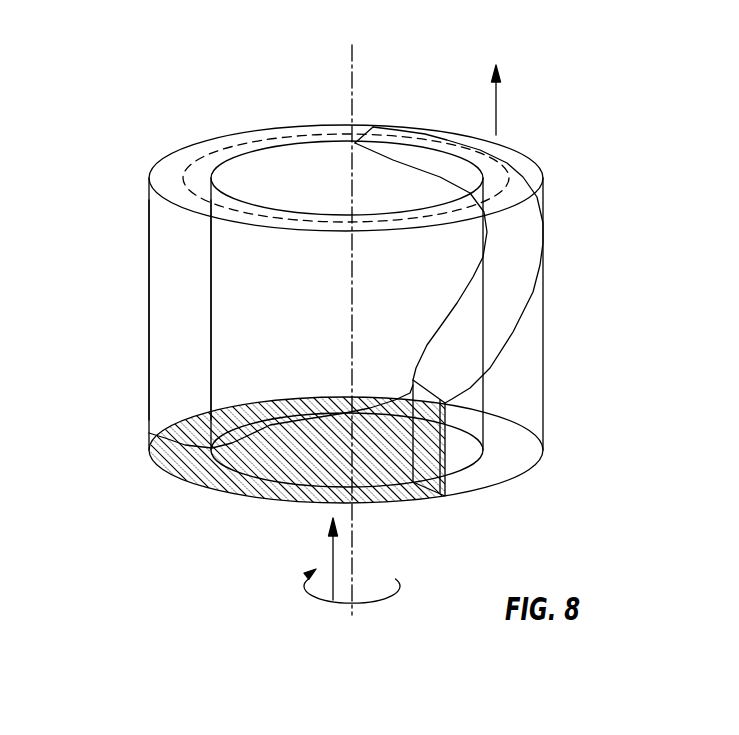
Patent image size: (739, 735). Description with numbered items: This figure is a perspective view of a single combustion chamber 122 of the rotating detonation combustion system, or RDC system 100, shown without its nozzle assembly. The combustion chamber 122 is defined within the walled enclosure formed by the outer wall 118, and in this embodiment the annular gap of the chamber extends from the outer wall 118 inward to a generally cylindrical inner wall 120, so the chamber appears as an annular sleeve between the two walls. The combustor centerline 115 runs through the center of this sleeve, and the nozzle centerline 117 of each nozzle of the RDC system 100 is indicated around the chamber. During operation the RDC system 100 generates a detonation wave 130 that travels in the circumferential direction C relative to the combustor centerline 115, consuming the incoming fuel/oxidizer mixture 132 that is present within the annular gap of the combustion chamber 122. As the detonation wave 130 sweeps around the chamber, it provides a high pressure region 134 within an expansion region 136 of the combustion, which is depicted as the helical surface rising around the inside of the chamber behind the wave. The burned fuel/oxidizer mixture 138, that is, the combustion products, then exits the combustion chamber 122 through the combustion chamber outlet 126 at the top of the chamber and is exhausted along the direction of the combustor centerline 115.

The RDC system 100 is at (444, 57).
The combustor centerline 115 is at (350, 104).
The nozzle centerline 117 is at (513, 148).
The outer wall 118 is at (148, 208).
The inner wall 120 is at (212, 337).
The combustion chamber 122 is at (172, 311).
The combustion chamber outlet 126 is at (190, 166).
The detonation wave 130 is at (450, 488).
The fuel/oxidizer mixture 132 is at (322, 552).
The high pressure region 134 is at (511, 459).
The expansion region 136 is at (523, 275).
The burned fuel/oxidizer mixture 138 is at (500, 108).